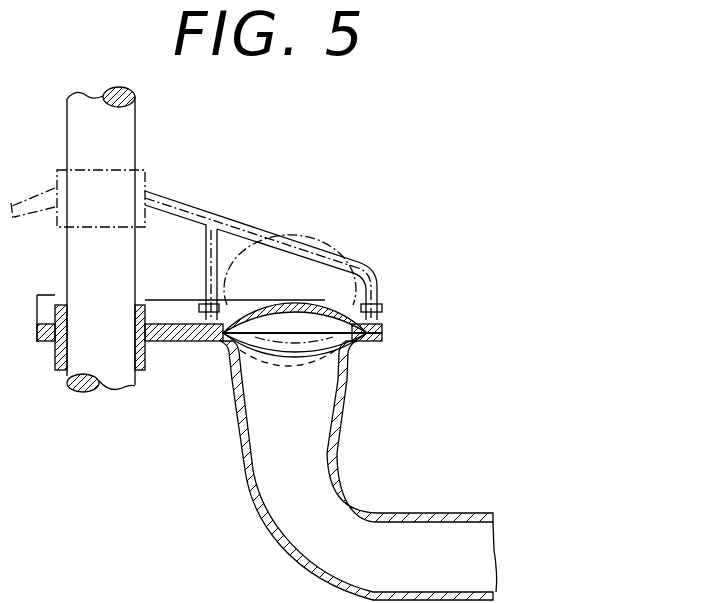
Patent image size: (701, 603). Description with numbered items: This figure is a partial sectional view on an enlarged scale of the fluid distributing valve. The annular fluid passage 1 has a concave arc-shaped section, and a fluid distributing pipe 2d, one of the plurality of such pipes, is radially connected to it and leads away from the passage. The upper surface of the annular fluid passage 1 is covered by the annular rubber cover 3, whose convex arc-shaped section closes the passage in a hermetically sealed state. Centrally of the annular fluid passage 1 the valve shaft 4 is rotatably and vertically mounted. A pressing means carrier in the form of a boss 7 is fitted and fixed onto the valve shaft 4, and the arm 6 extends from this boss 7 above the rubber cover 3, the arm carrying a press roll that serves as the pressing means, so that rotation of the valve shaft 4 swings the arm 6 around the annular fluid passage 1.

The annular fluid passage 1 is at (307, 349).
The fluid distributing pipe 2d is at (313, 513).
The annular rubber cover 3 is at (323, 306).
The valve shaft 4 is at (118, 140).
The arm 6 is at (286, 250).
The boss 7 is at (145, 190).